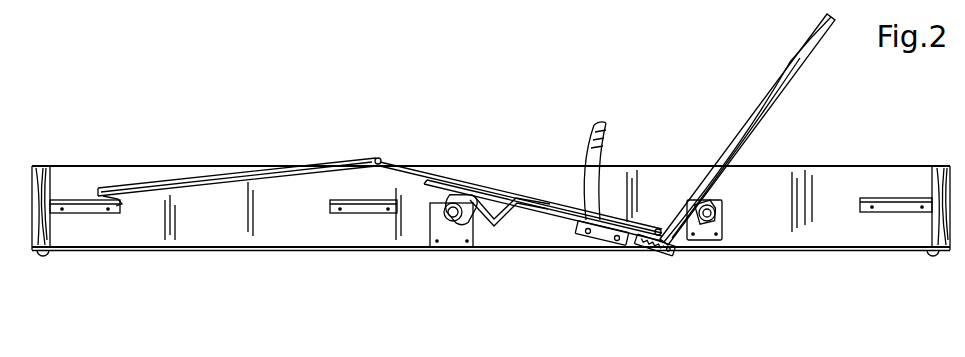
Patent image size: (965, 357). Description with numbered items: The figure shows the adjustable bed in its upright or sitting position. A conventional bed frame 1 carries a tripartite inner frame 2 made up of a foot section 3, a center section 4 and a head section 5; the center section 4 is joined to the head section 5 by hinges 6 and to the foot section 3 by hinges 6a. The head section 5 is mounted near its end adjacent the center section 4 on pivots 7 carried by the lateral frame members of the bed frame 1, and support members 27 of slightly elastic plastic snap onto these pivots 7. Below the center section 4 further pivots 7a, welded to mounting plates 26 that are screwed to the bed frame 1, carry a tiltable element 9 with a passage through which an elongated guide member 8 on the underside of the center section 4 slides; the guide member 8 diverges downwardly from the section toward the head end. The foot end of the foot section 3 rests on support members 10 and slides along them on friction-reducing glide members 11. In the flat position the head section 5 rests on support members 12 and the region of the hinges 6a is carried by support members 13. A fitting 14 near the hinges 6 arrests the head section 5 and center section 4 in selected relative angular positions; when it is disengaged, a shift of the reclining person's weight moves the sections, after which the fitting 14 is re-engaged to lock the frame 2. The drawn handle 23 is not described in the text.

The bed frame 1 is at (657, 158).
The inner frame 2 is at (538, 186).
The foot section 3 is at (205, 178).
The center section 4 is at (482, 186).
The head section 5 is at (792, 81).
The hinges 6 is at (658, 228).
The hinges 6a is at (378, 157).
The pivots 7 is at (716, 214).
The pivots 7a is at (453, 221).
The guide members 8 is at (497, 216).
The tiltable element 9 is at (456, 198).
The support members 10 is at (93, 212).
The glide members 11 is at (118, 206).
The support members 12 is at (899, 213).
The support members 13 is at (355, 213).
The fitting 14 is at (654, 259).
The handle lever 23 is at (603, 128).
The mounting plates 26 is at (432, 230).
The support members 27 is at (713, 203).